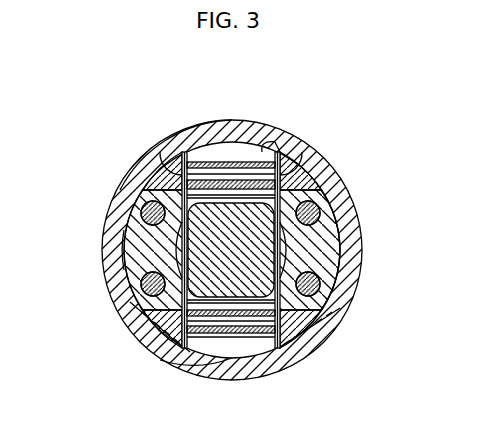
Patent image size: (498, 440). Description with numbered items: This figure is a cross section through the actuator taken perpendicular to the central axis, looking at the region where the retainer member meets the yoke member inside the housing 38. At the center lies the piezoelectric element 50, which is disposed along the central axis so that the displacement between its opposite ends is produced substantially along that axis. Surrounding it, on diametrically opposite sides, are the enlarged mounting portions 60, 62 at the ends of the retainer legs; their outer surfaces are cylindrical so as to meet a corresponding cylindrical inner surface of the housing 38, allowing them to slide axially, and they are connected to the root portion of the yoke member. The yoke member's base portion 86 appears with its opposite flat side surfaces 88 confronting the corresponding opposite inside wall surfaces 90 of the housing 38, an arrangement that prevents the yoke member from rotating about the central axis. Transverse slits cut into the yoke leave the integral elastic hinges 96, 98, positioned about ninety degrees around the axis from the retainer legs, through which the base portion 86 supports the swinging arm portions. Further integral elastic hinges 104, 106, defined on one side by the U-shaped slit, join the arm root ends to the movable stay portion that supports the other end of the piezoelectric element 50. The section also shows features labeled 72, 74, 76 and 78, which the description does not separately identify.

The housing 38 is at (116, 192).
The piezoelectric element 50 is at (243, 235).
The mounting portion 60 is at (360, 226).
The mounting portion 62 is at (125, 244).
The bolt holes 72 is at (318, 182).
The support block 74 is at (162, 186).
The support block 76 is at (320, 302).
The strut 78 is at (130, 314).
The base portion 86 is at (212, 150).
The flat side surfaces 88 is at (170, 176).
The inside wall surfaces 90 is at (188, 160).
The integral elastic hinge 96 is at (256, 184).
The integral elastic hinge 98 is at (186, 360).
The integral elastic hinge 104 is at (272, 146).
The integral elastic hinge 106 is at (300, 362).